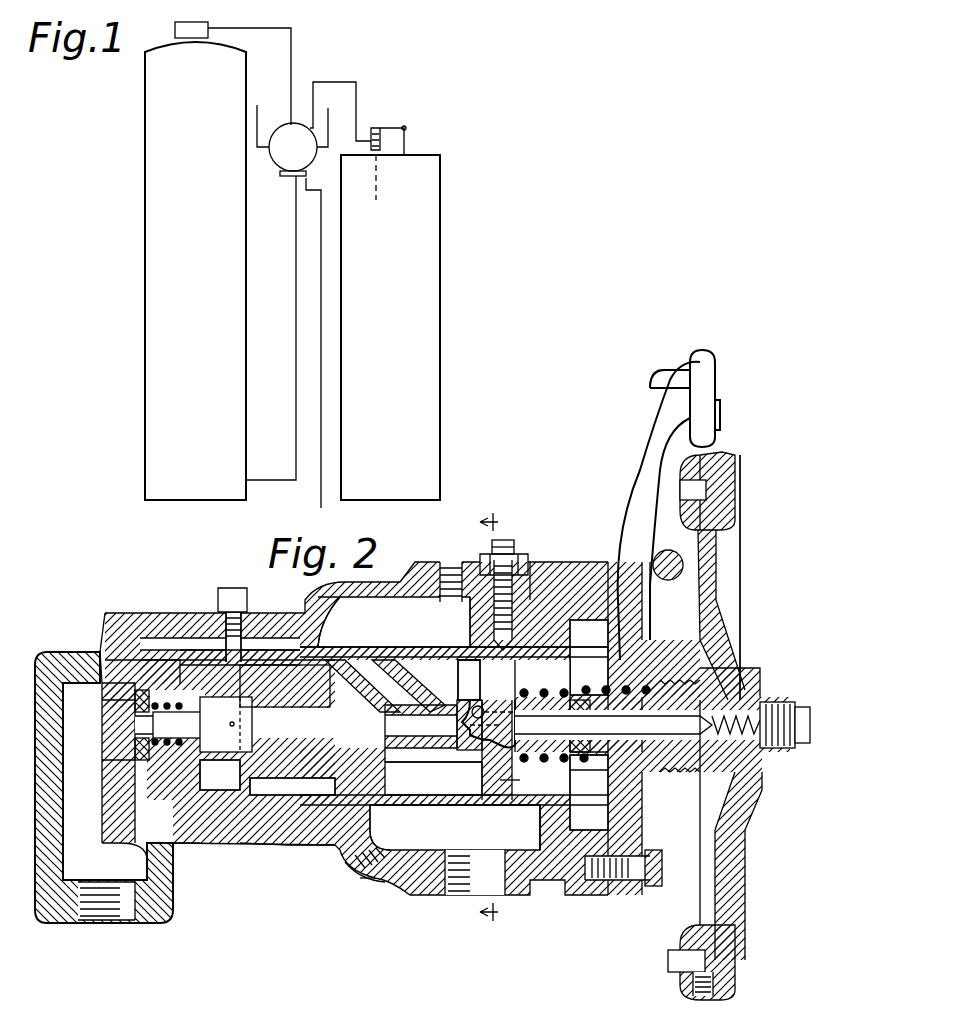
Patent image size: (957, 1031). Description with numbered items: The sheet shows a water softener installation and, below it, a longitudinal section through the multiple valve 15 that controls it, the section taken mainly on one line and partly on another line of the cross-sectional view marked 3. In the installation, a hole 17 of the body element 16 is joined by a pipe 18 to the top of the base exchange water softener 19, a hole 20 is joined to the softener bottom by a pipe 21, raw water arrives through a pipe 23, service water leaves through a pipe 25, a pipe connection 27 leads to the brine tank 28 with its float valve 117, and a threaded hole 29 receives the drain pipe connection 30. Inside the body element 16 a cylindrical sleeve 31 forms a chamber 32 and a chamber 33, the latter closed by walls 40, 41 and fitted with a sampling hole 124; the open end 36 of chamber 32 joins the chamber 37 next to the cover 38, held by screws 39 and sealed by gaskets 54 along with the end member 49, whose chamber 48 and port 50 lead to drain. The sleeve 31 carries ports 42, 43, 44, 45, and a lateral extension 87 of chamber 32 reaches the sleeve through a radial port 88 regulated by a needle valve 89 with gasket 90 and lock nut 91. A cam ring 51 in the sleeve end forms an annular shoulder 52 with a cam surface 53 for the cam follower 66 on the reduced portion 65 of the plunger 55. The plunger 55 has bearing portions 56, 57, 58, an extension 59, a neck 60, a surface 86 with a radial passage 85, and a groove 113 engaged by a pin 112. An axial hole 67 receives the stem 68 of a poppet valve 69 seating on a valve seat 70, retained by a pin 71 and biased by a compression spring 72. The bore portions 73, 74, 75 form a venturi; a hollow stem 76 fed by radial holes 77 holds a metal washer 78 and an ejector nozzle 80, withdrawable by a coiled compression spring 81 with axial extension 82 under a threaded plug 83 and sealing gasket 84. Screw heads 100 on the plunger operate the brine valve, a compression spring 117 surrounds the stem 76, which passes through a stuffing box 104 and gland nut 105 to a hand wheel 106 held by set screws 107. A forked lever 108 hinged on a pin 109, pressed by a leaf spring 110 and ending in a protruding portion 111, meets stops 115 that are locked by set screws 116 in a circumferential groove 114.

In FIG. 2, the section line 3 is at (489, 715).
In FIG. 1, the multiple valve 15 is at (276, 162).
In FIG. 2, the multiple valve 15 is at (326, 838).
In FIG. 2, the body element 16 is at (226, 846).
In FIG. 2, the hole 17 is at (450, 565).
In FIG. 1, the pipe 18 is at (292, 50).
In FIG. 1, the base exchange water softener 19 is at (158, 234).
In FIG. 2, the hole 20 is at (455, 892).
In FIG. 1, the pipe 21 is at (295, 342).
In FIG. 1, the pipe 23 is at (262, 128).
In FIG. 1, the pipe 25 is at (333, 135).
In FIG. 1, the pipe connection 27 is at (338, 82).
In FIG. 1, the brine tank 28 is at (428, 238).
In FIG. 2, the threaded hole 29 is at (112, 915).
In FIG. 1, the pipe connection 30 is at (322, 350).
In FIG. 2, the cylindrical sleeve 31 is at (470, 797).
In FIG. 2, the chamber 32 is at (454, 630).
In FIG. 2, the chamber 33 is at (455, 827).
In FIG. 2, the open end 36 is at (589, 657).
In FIG. 2, the chamber 37 is at (589, 792).
In FIG. 2, the cover 38 is at (640, 880).
In FIG. 2, the screws 39 is at (648, 856).
In FIG. 2, the wall 40 is at (375, 815).
In FIG. 2, the wall 41 is at (548, 818).
In FIG. 2, the port 42 is at (350, 650).
In FIG. 2, the port 43 is at (397, 797).
In FIG. 2, the port 44 is at (445, 695).
In FIG. 2, the port 45 is at (546, 764).
In FIG. 2, the chamber 48 is at (104, 787).
In FIG. 2, the end member 49 is at (166, 893).
In FIG. 2, the port 50 is at (112, 722).
In FIG. 2, the cam ring 51 is at (140, 790).
In FIG. 2, the annular shoulder 52 is at (212, 790).
In FIG. 2, the cam surface 53 is at (160, 650).
In FIG. 2, the gaskets 54 is at (176, 845).
In FIG. 2, the plunger 55 is at (300, 845).
In FIG. 2, the top cylindrical bearing portion 56 is at (505, 795).
In FIG. 2, the middle cylindrical bearing portion 57 is at (396, 782).
In FIG. 2, the bottom cylindrical bearing portion 58 is at (258, 838).
In FIG. 2, the extension 59 is at (470, 680).
In FIG. 2, the neck 60 is at (478, 762).
In FIG. 2, the reduced diameter portion 65 is at (147, 830).
In FIG. 2, the cam follower 66 is at (130, 660).
In FIG. 2, the axial hole 67 is at (175, 760).
In FIG. 2, the stem 68 is at (187, 724).
In FIG. 2, the poppet valve 69 is at (135, 702).
In FIG. 2, the valve seat 70 is at (135, 768).
In FIG. 2, the pin 71 is at (235, 724).
In FIG. 2, the compression spring 72 is at (177, 713).
In FIG. 2, the top bore portion 73 is at (455, 762).
In FIG. 2, the middle bore portion 74 is at (392, 748).
In FIG. 2, the bottom bore portion 75 is at (342, 752).
In FIG. 2, the hollow stem 76 is at (565, 705).
In FIG. 2, the radial holes 77 is at (485, 710).
In FIG. 2, the metal washer 78 is at (445, 750).
In FIG. 2, the ejector nozzle 80 is at (405, 735).
In FIG. 2, the coiled compression spring 81 is at (714, 717).
In FIG. 2, the axial extension 82 is at (640, 724).
In FIG. 2, the threaded plug 83 is at (803, 748).
In FIG. 2, the sealing gasket 84 is at (796, 700).
In FIG. 2, the radial passage 85 is at (362, 686).
In FIG. 2, the surface 86 is at (340, 690).
In FIG. 2, the lateral extension 87 is at (466, 644).
In FIG. 2, the radial port 88 is at (542, 678).
In FIG. 2, the needle valve 89 is at (512, 545).
In FIG. 2, the sealing gasket 90 is at (546, 600).
In FIG. 2, the lock nut 91 is at (490, 558).
In FIG. 2, the screw heads 100 is at (515, 755).
In FIG. 2, the stuffing box 104 is at (612, 770).
In FIG. 2, the gland nut 105 is at (748, 806).
In FIG. 2, the hand wheel 106 is at (742, 895).
In FIG. 2, the set screws 107 is at (760, 680).
In FIG. 2, the forked lever 108 is at (650, 510).
In FIG. 2, the pin 109 is at (690, 650).
In FIG. 2, the leaf spring 110 is at (680, 580).
In FIG. 2, the protruding portion 111 is at (708, 384).
In FIG. 2, the pin 112 is at (215, 635).
In FIG. 2, the groove 113 is at (262, 650).
In FIG. 2, the circumferential groove 114 is at (706, 490).
In FIG. 2, the stops 115 is at (668, 962).
In FIG. 2, the set screws 116 is at (700, 996).
In FIG. 1, the compression spring 117 is at (368, 130).
In FIG. 2, the compression spring 117 is at (585, 752).
In FIG. 2, the hole 124 is at (380, 868).